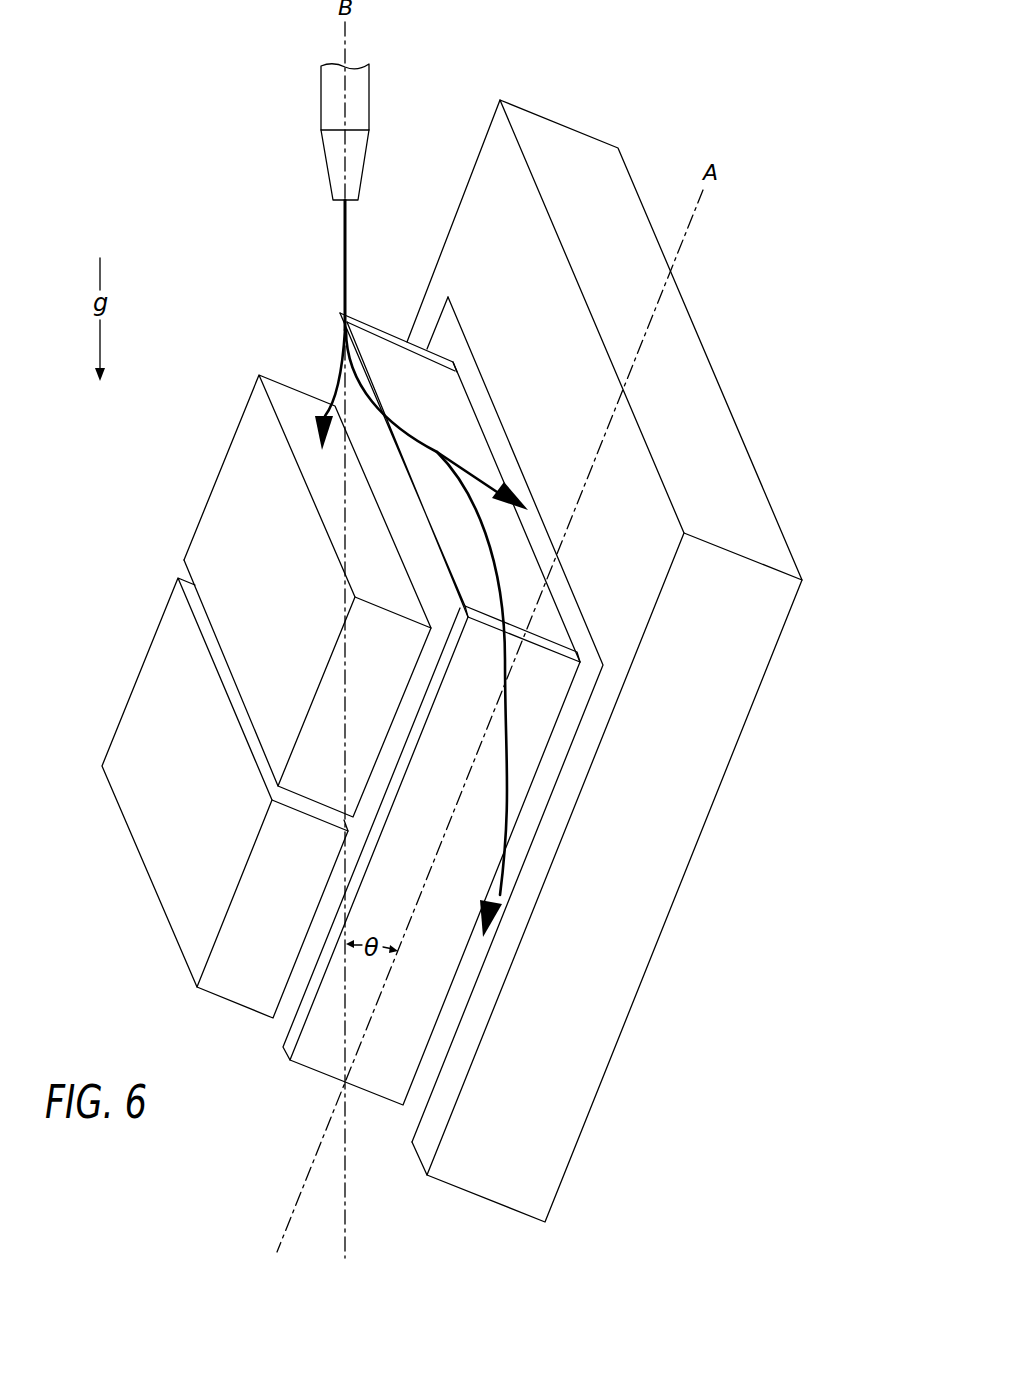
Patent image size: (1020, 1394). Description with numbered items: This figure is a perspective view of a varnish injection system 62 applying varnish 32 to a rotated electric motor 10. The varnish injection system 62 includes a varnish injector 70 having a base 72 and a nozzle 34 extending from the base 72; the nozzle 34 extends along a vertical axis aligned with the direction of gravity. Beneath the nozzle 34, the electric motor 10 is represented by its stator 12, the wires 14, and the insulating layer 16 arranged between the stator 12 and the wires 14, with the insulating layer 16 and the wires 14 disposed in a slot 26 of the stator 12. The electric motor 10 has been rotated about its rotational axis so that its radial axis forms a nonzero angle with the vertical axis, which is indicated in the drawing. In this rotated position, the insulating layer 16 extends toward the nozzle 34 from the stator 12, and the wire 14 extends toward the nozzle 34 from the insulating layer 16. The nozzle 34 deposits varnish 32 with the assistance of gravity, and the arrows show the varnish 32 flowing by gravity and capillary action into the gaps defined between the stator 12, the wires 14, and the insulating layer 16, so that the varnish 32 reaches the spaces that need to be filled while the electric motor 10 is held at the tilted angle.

The electric motor 10 is at (90, 147).
The stator 12 is at (740, 486).
The wires 14 is at (237, 477).
The insulating layer 16 is at (538, 700).
The slot 26 is at (447, 337).
The varnish 32 is at (343, 258).
The nozzle 34 is at (323, 168).
The varnish injection system 62 is at (544, 64).
The varnish injector 70 is at (335, 100).
The base 72 is at (321, 92).